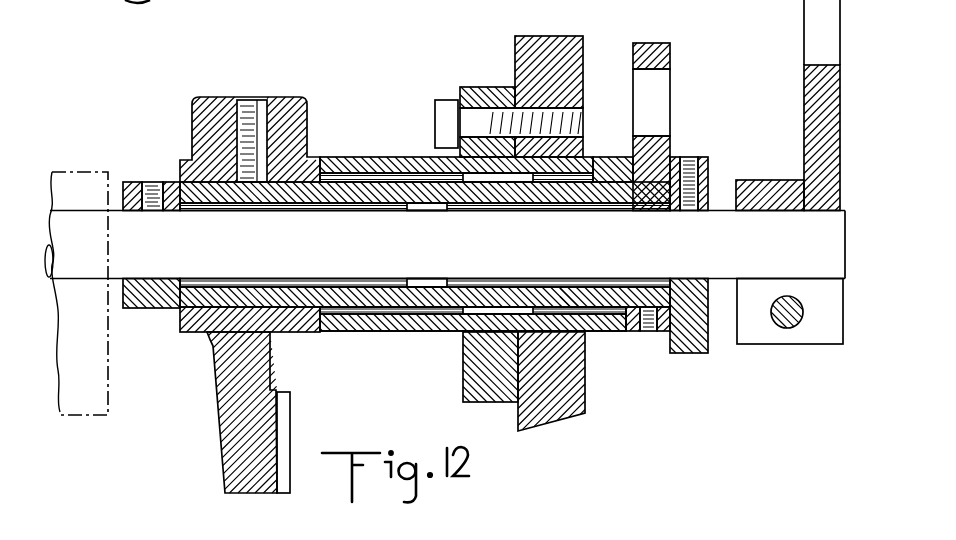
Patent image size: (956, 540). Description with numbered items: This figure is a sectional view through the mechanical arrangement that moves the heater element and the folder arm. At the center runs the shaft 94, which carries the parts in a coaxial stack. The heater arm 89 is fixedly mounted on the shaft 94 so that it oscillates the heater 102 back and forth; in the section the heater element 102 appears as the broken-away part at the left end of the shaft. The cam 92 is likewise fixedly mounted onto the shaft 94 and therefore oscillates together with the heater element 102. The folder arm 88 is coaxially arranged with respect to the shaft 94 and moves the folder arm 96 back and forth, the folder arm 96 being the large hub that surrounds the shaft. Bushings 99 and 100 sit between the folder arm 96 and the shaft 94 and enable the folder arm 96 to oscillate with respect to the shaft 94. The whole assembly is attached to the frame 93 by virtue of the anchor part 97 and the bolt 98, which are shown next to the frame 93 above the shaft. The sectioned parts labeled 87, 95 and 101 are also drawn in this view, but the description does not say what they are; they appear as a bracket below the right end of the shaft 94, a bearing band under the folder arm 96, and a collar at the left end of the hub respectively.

The mounting bracket 87 is at (802, 351).
The folder arm 88 is at (670, 50).
The heater arm 89 is at (835, 93).
The cam 92 is at (712, 168).
The frame 93 is at (600, 390).
The shaft 94 is at (833, 247).
The bearing race 95 is at (342, 331).
The folder arm 96 is at (307, 117).
The anchor part 97 is at (377, 157).
The bolt 98 is at (443, 113).
The bushing 99 is at (595, 157).
The bushing 100 is at (307, 211).
The retaining collar 101 is at (145, 182).
The heater element 102 is at (102, 390).